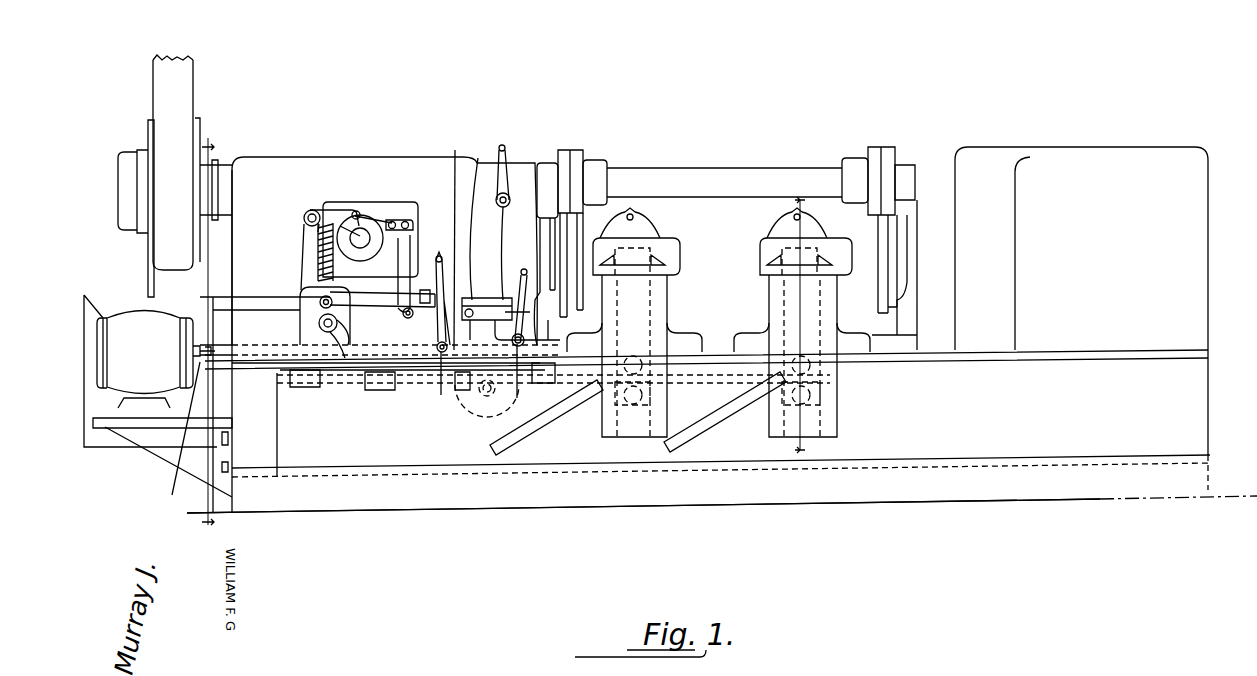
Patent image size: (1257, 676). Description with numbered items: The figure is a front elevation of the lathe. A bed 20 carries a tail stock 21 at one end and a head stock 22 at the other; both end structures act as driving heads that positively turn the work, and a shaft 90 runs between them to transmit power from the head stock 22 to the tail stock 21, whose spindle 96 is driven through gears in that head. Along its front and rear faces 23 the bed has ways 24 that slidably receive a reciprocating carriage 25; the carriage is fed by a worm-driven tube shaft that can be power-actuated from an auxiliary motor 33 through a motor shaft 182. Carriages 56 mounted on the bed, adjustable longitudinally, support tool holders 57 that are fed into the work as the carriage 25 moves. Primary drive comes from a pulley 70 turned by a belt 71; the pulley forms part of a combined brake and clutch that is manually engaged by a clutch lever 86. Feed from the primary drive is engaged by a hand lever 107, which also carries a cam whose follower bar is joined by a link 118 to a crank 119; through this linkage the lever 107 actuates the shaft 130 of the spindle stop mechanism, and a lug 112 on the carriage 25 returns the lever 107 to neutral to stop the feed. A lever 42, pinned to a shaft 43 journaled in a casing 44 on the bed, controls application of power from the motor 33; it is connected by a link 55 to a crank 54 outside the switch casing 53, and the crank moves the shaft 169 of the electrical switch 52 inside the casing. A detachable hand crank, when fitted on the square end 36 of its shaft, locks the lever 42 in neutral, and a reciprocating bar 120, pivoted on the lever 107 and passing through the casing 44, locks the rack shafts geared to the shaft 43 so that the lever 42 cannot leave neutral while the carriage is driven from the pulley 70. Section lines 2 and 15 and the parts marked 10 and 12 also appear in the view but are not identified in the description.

The section line 2 is at (207, 333).
The lever 10 is at (516, 300).
The lever 12 is at (438, 256).
The section line 15 is at (798, 323).
The bed 20 is at (1037, 495).
The tail stock 21 is at (1083, 157).
The head stock 22 is at (365, 165).
The front and rear faces 23 is at (945, 470).
The ways 24 is at (1105, 460).
The reciprocating carriage 25 is at (712, 505).
The auxiliary motor 33 is at (127, 310).
The complementary end 36 is at (437, 365).
The lever 42 is at (454, 241).
The shaft 43 is at (428, 347).
The casing 44 is at (479, 219).
The electrical switch 52 is at (348, 300).
The casing 53 is at (298, 300).
The crank 54 is at (338, 366).
The link 55 is at (380, 305).
The carriages 56 is at (760, 302).
The tool holders 57 is at (770, 240).
The pulley 70 is at (155, 120).
The belt 71 is at (183, 76).
The clutch lever 86 is at (503, 205).
The shaft 90 is at (830, 172).
The spindle 96 is at (885, 258).
The hand lever 107 is at (530, 300).
The lug 112 is at (512, 445).
The link 118 is at (355, 213).
The crank 119 is at (399, 220).
The reciprocating bar 120 is at (497, 148).
The shaft 130 is at (394, 222).
The shaft 169 is at (310, 338).
The motor shaft 182 is at (175, 436).